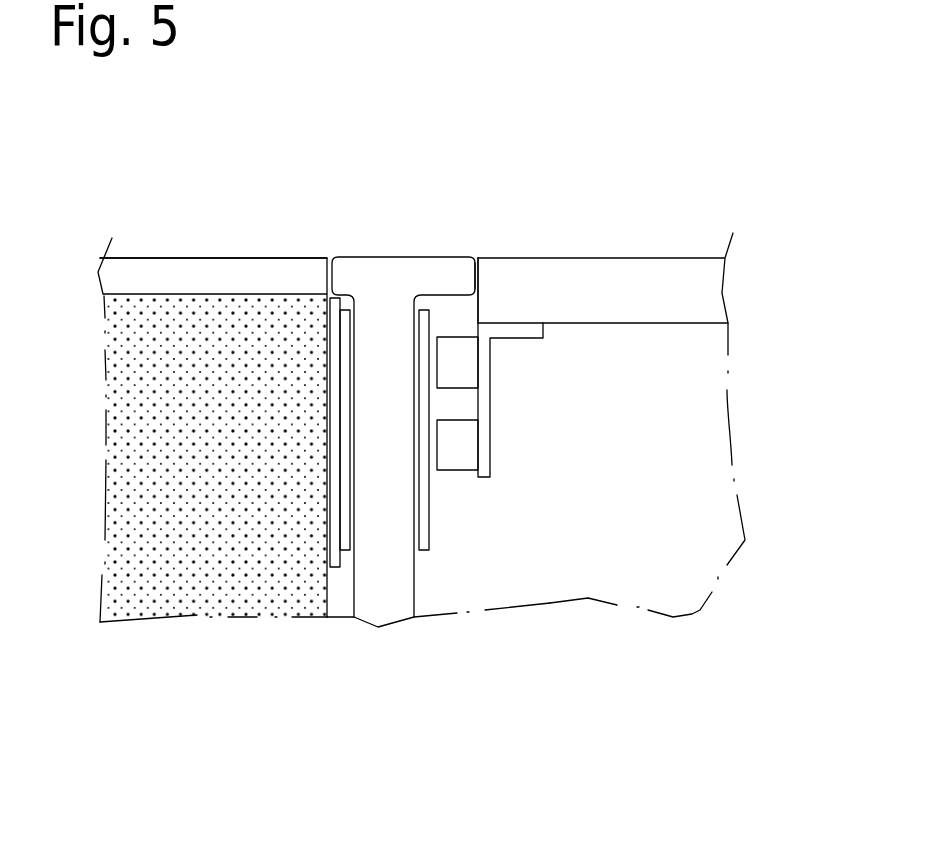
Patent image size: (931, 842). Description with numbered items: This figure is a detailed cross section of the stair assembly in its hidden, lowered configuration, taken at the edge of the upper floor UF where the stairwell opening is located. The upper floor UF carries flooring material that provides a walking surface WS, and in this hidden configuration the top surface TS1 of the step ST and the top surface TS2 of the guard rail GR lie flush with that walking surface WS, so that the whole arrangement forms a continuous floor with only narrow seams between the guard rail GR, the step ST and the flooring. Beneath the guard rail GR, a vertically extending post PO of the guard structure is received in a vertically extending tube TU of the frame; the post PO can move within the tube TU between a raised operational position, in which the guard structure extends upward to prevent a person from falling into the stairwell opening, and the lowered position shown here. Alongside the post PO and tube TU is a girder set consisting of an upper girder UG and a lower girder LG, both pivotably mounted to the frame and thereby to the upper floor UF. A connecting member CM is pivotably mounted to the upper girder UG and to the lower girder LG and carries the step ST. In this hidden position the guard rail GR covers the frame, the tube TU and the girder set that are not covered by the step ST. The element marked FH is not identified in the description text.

The front head plate FH is at (174, 280).
The walking surface WS is at (255, 243).
The top surface of the guard rail TS2 is at (380, 243).
The guard rail GR is at (440, 282).
The top surface of the steps TS1 is at (572, 238).
The step ST is at (692, 298).
The upper girder UG is at (460, 368).
The connecting member CM is at (485, 412).
The lower girder LG is at (462, 453).
The tube TU is at (418, 523).
The post PO is at (387, 570).
The upper floor UF is at (143, 458).